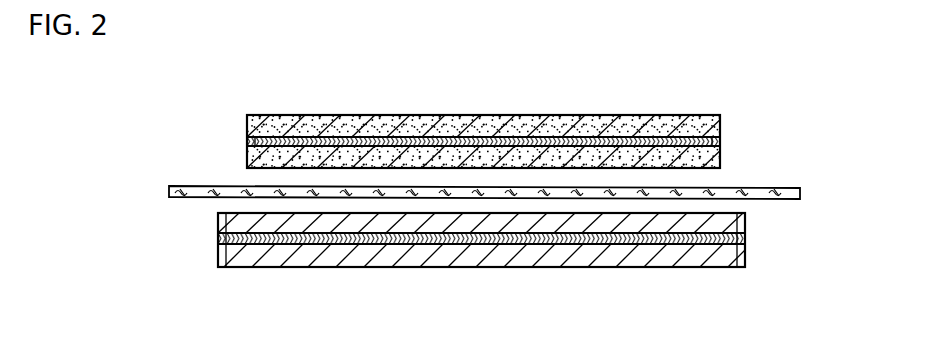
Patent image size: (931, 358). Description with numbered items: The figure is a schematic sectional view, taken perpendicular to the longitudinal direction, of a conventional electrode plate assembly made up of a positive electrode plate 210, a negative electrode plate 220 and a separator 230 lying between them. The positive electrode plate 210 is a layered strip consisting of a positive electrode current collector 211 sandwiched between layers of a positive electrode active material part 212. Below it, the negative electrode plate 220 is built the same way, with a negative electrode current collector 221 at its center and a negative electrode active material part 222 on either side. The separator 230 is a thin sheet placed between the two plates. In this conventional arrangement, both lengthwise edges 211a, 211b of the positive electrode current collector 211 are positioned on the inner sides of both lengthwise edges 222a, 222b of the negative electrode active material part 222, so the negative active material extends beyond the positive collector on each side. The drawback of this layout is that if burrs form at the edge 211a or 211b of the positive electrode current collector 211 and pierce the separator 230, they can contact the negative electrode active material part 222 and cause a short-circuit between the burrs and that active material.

The positive electrode plate 210 is at (479, 101).
The positive electrode current collector 211 is at (327, 138).
The lengthwise edge of positive electrode current collector 211a is at (247, 139).
The lengthwise edge of positive electrode current collector 211b is at (720, 143).
The positive electrode active material part 212 is at (490, 160).
The separator 230 is at (766, 198).
The negative electrode plate 220 is at (471, 275).
The negative electrode current collector 221 is at (354, 239).
The negative electrode active material part 222 is at (487, 225).
The lengthwise edge of negative electrode active material part 222a is at (218, 226).
The lengthwise edge of negative electrode active material part 222b is at (745, 228).